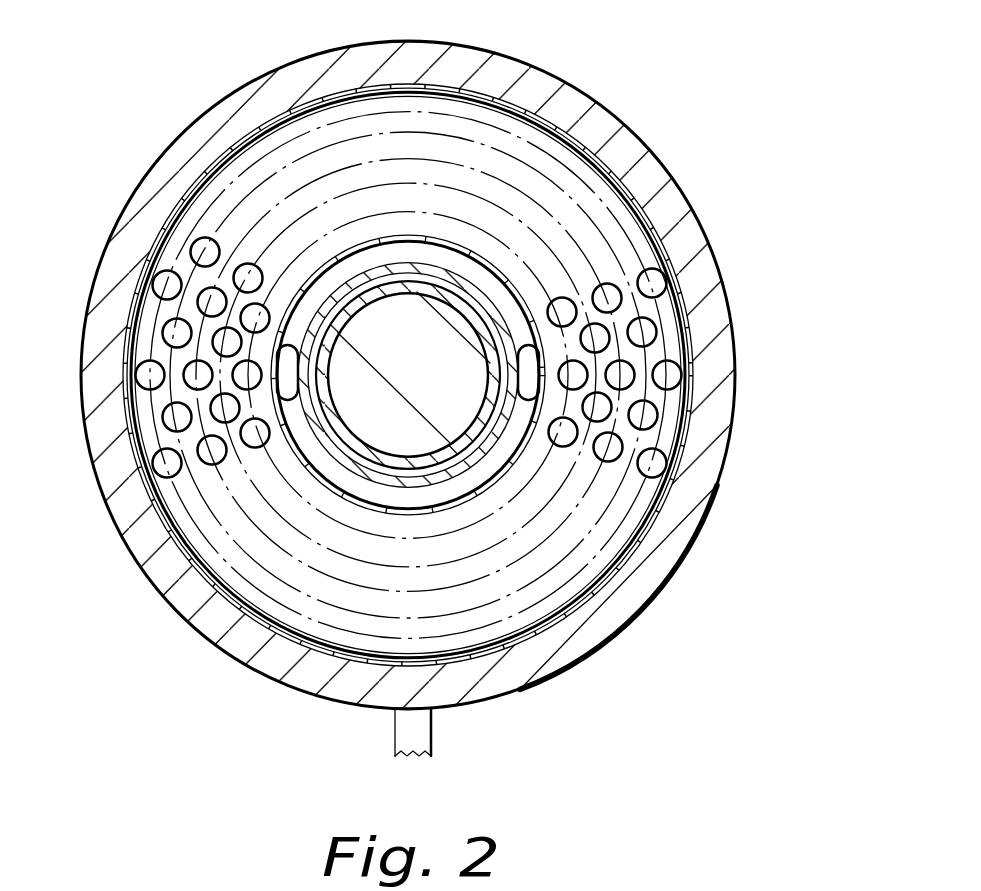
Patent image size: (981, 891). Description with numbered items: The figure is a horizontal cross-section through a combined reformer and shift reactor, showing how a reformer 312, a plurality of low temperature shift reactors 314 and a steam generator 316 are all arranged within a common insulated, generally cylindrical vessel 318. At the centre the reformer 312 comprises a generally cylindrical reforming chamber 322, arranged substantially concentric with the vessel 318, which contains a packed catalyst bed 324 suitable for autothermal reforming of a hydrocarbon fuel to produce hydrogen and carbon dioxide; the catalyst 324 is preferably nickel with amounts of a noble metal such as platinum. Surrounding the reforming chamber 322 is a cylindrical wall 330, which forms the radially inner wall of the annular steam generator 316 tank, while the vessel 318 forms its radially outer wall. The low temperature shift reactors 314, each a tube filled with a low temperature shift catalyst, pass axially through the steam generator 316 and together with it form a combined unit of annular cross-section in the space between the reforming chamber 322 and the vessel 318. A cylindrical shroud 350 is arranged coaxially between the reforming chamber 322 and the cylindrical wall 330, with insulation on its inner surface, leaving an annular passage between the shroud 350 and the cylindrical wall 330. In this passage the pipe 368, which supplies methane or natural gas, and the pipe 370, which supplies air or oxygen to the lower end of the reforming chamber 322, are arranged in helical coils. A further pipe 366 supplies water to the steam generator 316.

The reformer 312 is at (530, 302).
The low temperature shift reactors 314 is at (660, 413).
The steam generator 316 is at (683, 450).
The vessel 318 is at (722, 142).
The reforming chamber 322 is at (500, 421).
The packed catalyst bed 324 is at (388, 402).
The cylindrical wall 330 is at (545, 321).
The cylindrical shroud 350 is at (495, 432).
The pipe 366 is at (428, 732).
The pipe 368 is at (290, 372).
The pipe 370 is at (535, 378).